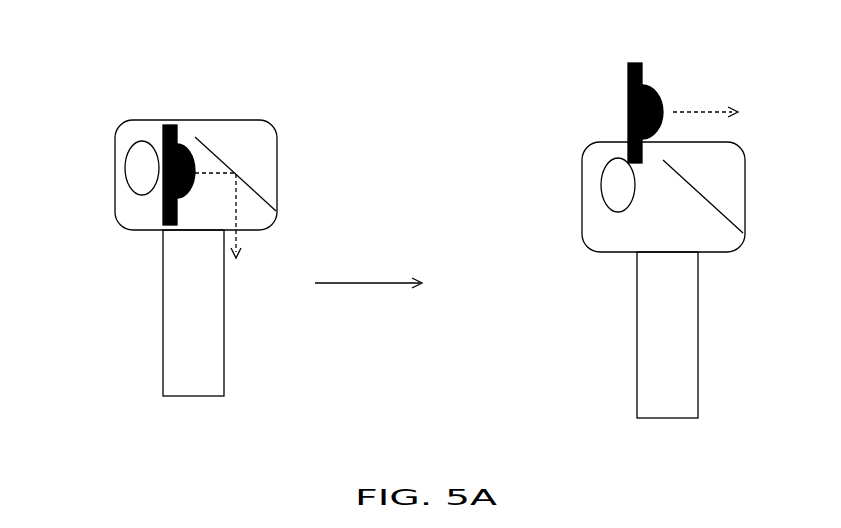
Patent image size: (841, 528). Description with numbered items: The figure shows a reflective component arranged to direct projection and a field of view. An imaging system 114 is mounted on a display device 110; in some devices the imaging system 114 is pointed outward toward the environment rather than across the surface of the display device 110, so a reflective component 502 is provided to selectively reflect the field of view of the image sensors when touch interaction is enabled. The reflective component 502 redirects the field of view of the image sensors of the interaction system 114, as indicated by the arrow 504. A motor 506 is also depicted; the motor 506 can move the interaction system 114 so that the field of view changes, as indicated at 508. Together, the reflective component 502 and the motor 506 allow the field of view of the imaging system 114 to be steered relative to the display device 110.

The display device 110 is at (163, 273).
The imaging system 114 is at (169, 113).
The reflective component 502 is at (223, 158).
The arrow 504 is at (238, 198).
The motor 506 is at (130, 147).
The field of view change indication 508 is at (697, 108).